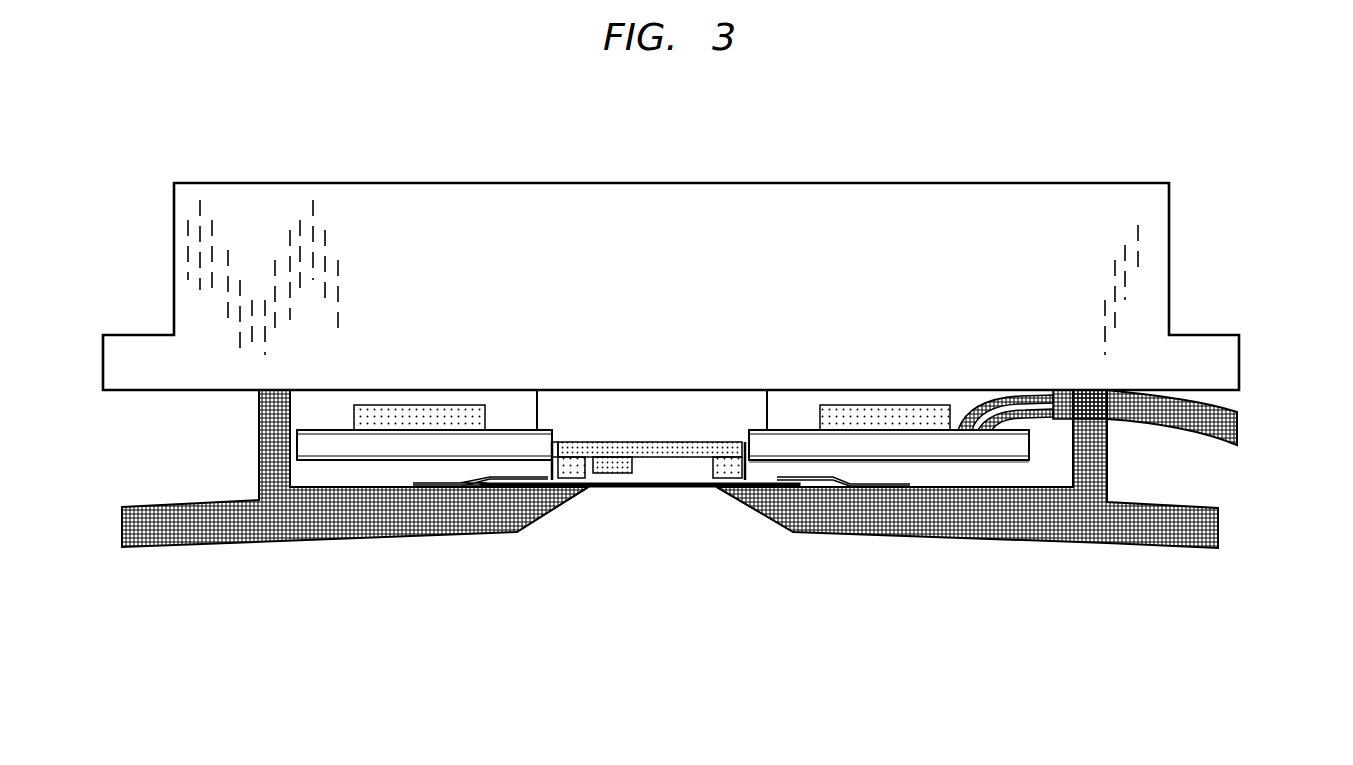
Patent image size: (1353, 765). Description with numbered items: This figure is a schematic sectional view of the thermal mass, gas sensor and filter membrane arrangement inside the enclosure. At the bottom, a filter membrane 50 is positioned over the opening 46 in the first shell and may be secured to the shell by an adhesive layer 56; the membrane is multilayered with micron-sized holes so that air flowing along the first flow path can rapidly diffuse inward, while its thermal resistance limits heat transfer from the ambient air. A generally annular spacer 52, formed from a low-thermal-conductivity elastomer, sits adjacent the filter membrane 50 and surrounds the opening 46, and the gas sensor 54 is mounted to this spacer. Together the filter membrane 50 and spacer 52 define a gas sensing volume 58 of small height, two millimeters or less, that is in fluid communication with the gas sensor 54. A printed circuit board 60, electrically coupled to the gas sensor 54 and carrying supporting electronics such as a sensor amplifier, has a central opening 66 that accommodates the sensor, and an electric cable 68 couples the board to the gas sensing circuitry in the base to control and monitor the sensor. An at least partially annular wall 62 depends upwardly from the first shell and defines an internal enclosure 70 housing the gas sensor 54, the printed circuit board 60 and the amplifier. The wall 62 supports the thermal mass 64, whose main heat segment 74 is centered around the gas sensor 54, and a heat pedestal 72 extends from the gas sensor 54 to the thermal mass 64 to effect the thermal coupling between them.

The opening 46 is at (678, 508).
The filter membrane 50 is at (752, 485).
The spacer 52 is at (572, 473).
The gas sensor 54 is at (641, 453).
The adhesive layer 56 is at (840, 482).
The gas sensing volume 58 is at (697, 470).
The printed circuit board 60 is at (1004, 448).
The annular wall 62 is at (259, 448).
The thermal mass 64 is at (540, 228).
The central opening 66 is at (557, 452).
The electric cable 68 is at (1238, 428).
The internal enclosure 70 is at (959, 470).
The heat pedestal 72 is at (631, 415).
The main heat segment 74 is at (136, 341).